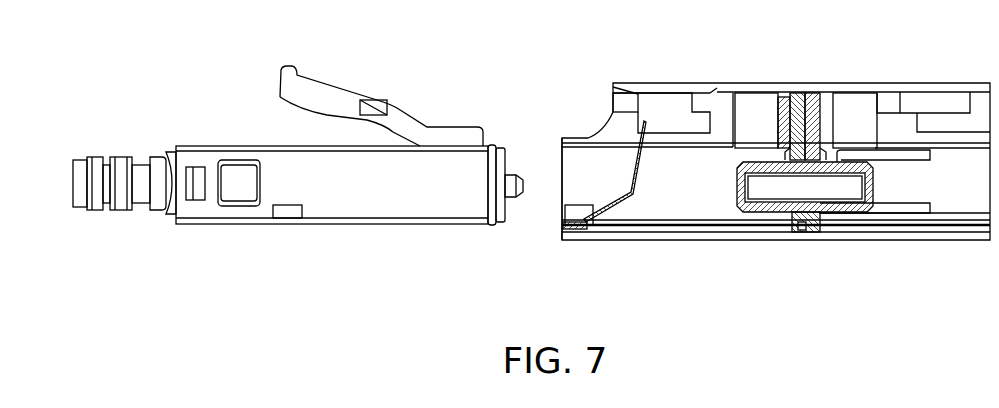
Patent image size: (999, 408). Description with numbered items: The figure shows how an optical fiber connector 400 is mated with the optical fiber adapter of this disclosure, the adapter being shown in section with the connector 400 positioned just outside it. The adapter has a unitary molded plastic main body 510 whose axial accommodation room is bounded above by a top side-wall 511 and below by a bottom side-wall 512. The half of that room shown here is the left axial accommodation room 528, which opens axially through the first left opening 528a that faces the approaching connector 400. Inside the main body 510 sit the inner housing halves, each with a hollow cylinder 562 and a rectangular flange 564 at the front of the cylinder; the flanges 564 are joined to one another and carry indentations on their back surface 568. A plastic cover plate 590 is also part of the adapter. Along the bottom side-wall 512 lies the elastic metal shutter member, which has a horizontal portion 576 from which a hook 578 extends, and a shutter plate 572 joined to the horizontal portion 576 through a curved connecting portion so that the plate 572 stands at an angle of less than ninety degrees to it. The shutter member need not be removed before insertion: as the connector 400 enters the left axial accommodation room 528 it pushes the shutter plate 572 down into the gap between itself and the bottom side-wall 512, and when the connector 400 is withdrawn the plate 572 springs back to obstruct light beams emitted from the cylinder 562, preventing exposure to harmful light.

The optical fiber connector 400 is at (207, 117).
The main body 510 is at (913, 256).
The top side-wall 511 is at (927, 92).
The bottom side-wall 512 is at (697, 236).
The left axial accommodation room 528 is at (700, 173).
The first left opening 528a is at (562, 175).
The hollow cylinder 562 is at (760, 208).
The rectangular flange 564 is at (797, 107).
The back surface 568 is at (815, 220).
The shutter plate 572 is at (637, 187).
The horizontal portion 576 is at (589, 237).
The hook 578 is at (803, 228).
The plastic cover plate 590 is at (810, 90).